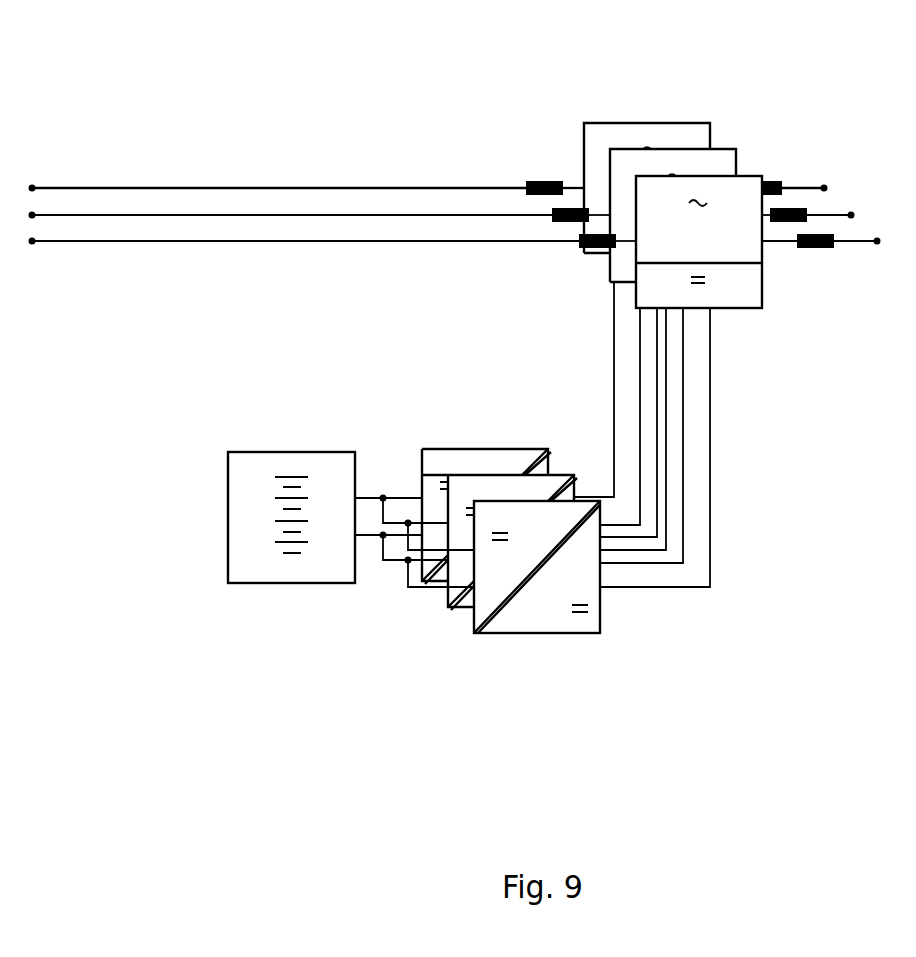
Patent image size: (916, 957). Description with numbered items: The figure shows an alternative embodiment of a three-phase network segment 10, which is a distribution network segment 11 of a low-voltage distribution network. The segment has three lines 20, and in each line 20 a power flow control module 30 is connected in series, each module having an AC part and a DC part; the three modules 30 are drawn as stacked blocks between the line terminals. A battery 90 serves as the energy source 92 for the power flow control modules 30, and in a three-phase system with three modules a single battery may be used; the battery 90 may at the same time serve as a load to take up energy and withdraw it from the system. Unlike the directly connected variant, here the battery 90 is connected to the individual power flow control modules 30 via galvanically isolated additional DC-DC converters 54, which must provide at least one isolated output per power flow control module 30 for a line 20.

The three-phase network segment 10 is at (455, 373).
The distribution network segment 11 is at (455, 389).
The line 20 is at (270, 187).
The power flow control module 30 is at (746, 175).
The DC-DC converter 54 is at (465, 607).
The battery 90 is at (228, 510).
The energy source 92 is at (351, 519).